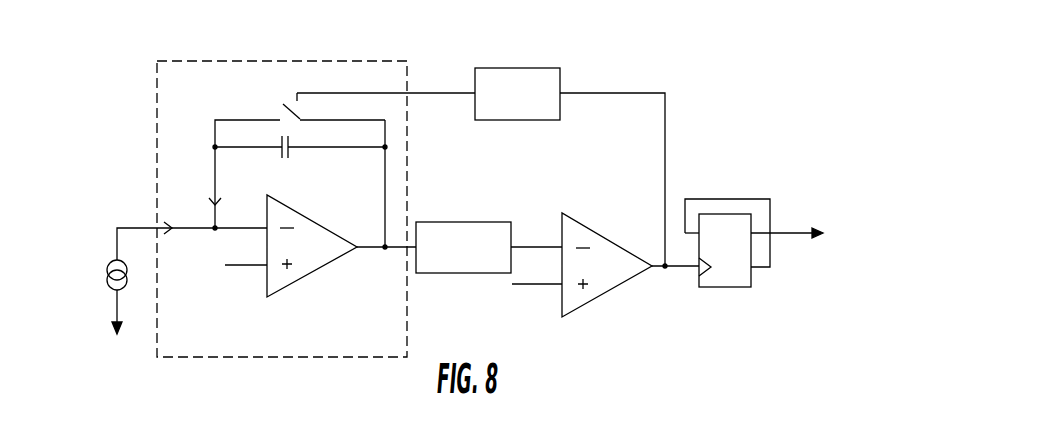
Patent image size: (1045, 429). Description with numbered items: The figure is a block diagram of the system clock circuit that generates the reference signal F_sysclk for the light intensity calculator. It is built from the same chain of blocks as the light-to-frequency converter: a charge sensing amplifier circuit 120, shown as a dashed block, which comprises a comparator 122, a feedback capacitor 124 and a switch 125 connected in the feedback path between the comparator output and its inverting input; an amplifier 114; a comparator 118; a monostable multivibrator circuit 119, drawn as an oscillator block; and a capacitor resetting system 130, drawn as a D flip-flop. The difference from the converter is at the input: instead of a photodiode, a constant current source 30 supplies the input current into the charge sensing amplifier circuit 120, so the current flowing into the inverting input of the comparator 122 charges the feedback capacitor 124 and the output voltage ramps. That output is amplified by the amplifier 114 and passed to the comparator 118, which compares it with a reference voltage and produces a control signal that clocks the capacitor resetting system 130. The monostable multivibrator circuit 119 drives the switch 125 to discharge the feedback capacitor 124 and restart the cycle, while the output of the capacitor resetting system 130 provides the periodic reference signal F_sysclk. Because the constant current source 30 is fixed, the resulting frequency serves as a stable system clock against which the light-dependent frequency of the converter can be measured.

The constant current source 30 is at (116, 258).
The charge sensing amplifier circuit 120 is at (316, 195).
The comparator 122 is at (341, 250).
The feedback capacitor 124 is at (300, 157).
The switch 125 is at (345, 118).
The amplifier 114 is at (489, 233).
The monostable multivibrator circuit 119 is at (542, 153).
The comparator 118 is at (605, 263).
The capacitor resetting system 130 is at (757, 255).